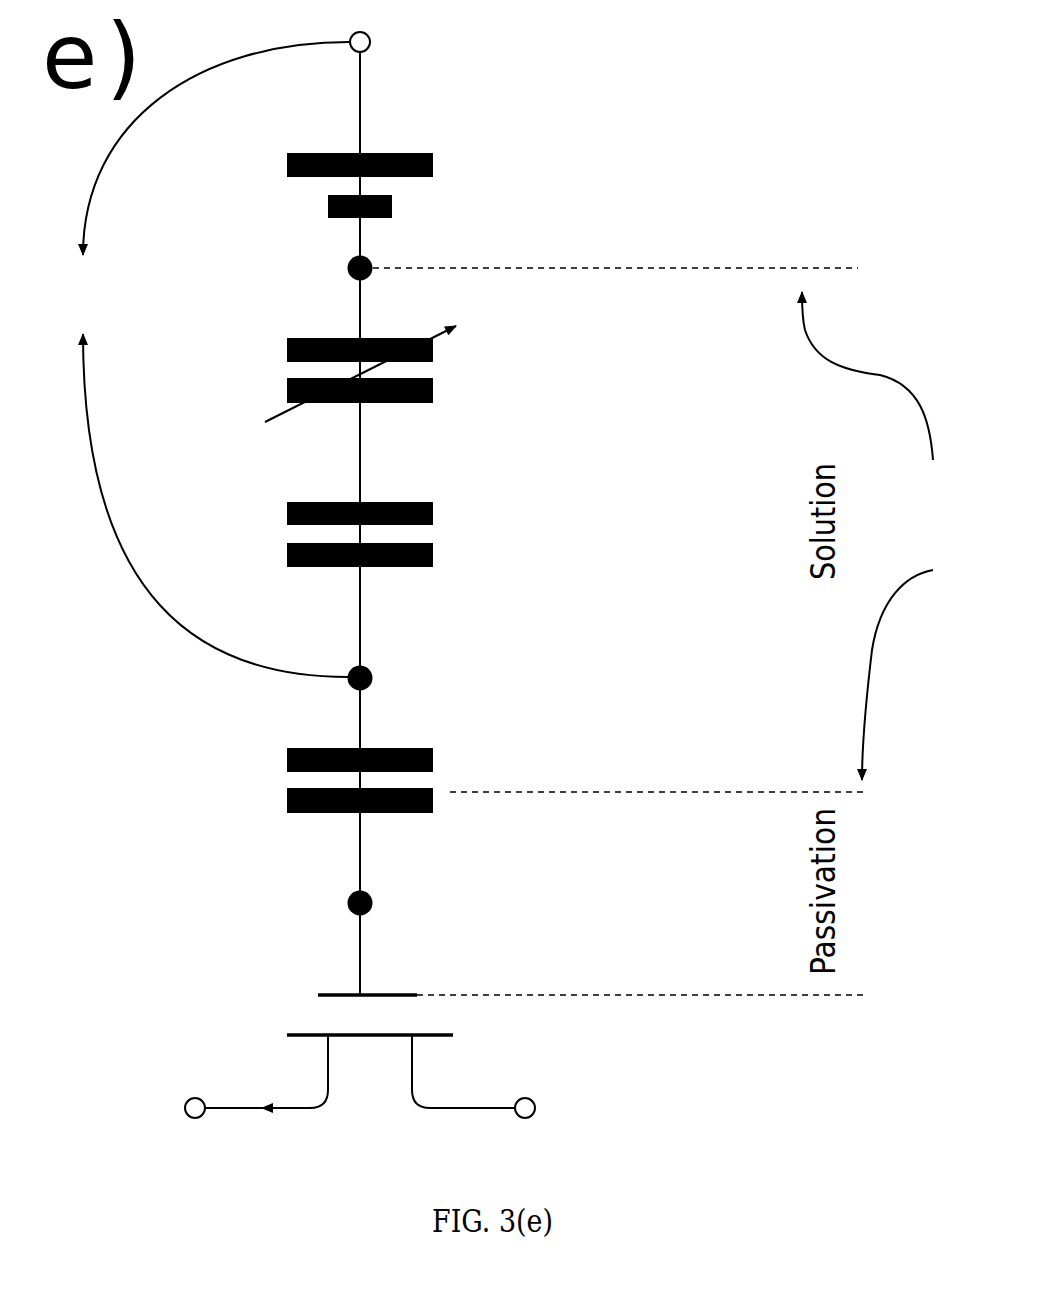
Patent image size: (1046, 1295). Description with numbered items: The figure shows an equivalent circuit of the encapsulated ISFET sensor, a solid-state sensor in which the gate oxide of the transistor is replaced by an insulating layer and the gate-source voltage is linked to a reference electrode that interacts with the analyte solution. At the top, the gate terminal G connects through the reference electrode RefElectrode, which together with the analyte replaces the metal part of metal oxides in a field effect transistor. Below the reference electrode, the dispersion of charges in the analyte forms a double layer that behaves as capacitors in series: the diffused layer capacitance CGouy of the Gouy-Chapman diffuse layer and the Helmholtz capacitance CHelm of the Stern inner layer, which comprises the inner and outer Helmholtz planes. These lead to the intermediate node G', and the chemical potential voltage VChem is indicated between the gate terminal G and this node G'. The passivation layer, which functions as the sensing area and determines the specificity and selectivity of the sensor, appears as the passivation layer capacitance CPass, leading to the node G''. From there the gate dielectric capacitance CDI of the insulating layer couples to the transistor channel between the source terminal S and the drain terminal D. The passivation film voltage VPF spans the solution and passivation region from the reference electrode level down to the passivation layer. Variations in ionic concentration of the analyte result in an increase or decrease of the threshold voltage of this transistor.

The gate terminal G is at (392, 32).
The reference electrode RefElectrode is at (554, 217).
The chemical potential voltage VChem is at (203, 359).
The diffused layer capacitance CGouy is at (420, 374).
The Helmholtz capacitance CHelm is at (422, 536).
The intermediate gate node G' is at (408, 678).
The passivation layer capacitance CPass is at (416, 780).
The intermediate gate node G'' is at (409, 903).
The gate dielectric capacitance CDI is at (393, 1017).
The source terminal S is at (236, 1097).
The drain terminal D is at (496, 1097).
The passivation film voltage VPF is at (881, 536).